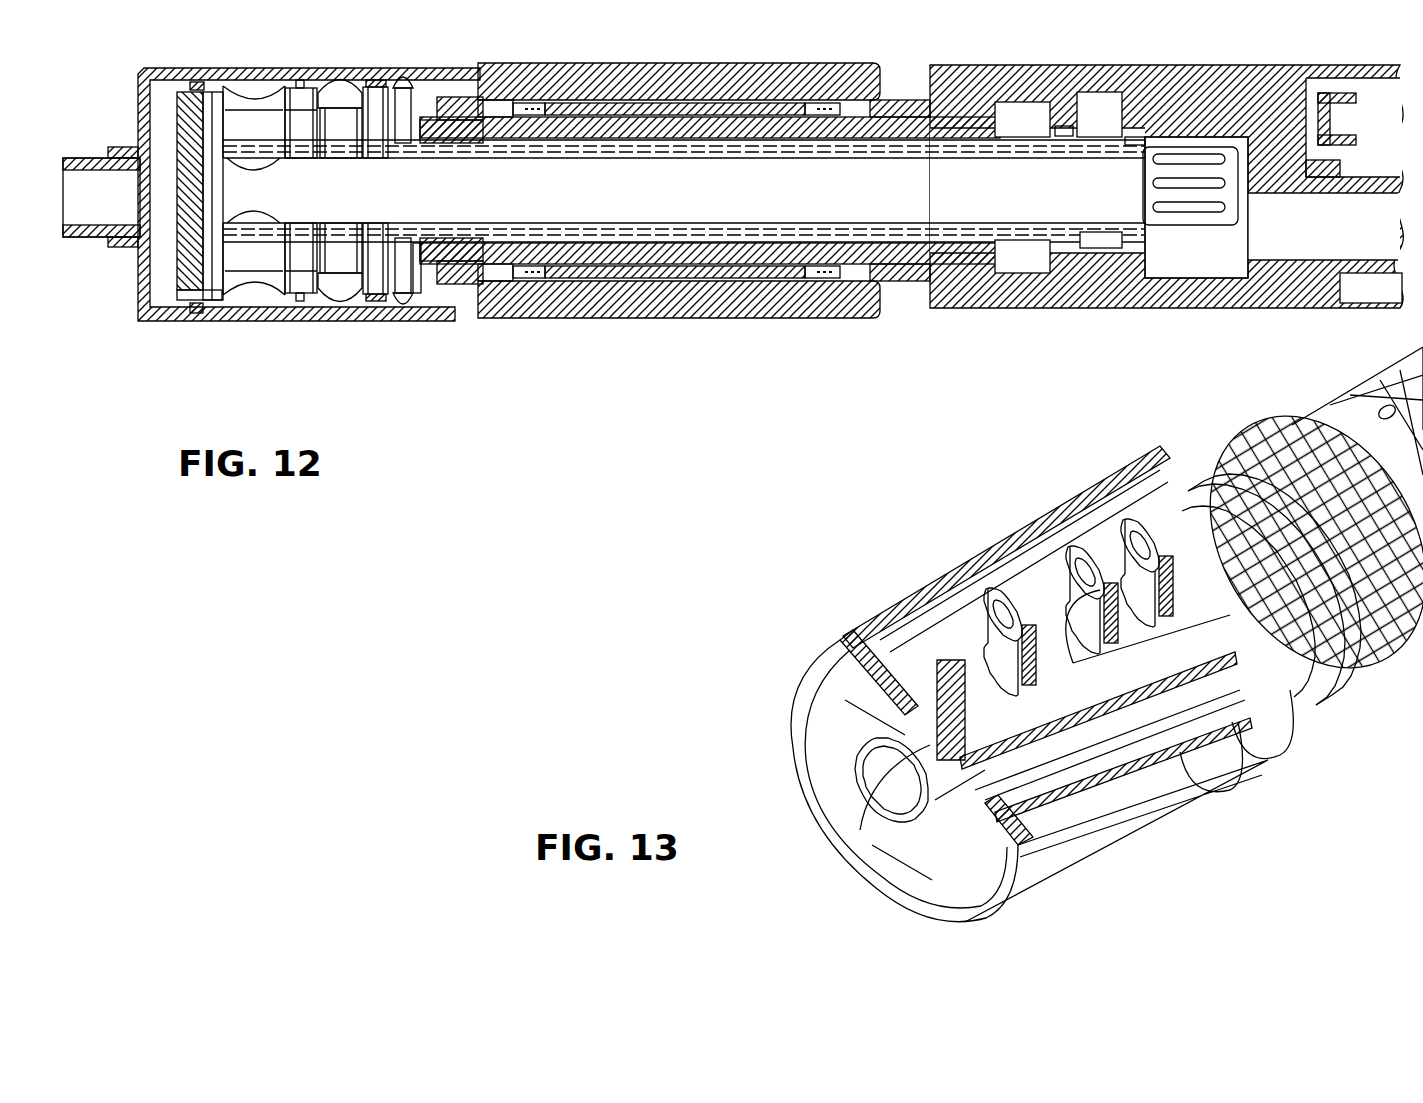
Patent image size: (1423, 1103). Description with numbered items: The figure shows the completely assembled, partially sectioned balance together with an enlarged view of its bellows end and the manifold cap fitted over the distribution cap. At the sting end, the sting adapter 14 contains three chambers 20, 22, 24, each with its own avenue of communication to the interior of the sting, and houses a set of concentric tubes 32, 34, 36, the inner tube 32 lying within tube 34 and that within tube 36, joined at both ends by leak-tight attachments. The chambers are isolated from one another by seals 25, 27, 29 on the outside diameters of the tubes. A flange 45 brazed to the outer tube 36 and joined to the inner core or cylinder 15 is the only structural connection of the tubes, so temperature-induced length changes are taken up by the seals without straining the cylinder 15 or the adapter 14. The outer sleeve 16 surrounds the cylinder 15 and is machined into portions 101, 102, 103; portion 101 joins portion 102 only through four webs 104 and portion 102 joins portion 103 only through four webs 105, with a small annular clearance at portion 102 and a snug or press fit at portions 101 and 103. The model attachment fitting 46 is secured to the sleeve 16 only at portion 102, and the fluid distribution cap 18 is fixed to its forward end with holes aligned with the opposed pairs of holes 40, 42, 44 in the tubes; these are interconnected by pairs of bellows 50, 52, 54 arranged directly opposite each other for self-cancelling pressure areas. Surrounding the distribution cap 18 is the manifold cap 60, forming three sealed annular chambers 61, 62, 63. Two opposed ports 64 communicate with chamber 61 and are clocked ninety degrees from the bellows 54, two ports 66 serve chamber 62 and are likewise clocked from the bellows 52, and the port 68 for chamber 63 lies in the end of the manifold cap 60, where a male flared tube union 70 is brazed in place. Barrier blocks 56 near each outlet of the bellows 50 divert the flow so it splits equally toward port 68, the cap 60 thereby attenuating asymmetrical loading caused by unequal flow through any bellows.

In FIG. 12, the sting adapter 14 is at (950, 66).
In FIG. 12, the inner core or cylinder 15 is at (641, 116).
In FIG. 12, the outer sleeve 16 is at (762, 66).
In FIG. 12, the fluid distribution cap 18 is at (180, 298).
In FIG. 13, the fluid distribution cap 18 is at (1196, 475).
In FIG. 12, the chamber 20 is at (1187, 258).
In FIG. 12, the chamber 22 is at (1100, 247).
In FIG. 12, the chamber 24 is at (1016, 258).
In FIG. 12, the seal 25 is at (1133, 140).
In FIG. 12, the seal 27 is at (1060, 126).
In FIG. 12, the seal 29 is at (977, 127).
In FIG. 12, the tube 32 is at (1186, 148).
In FIG. 12, the tube 34 is at (1094, 134).
In FIG. 12, the tube 36 is at (1012, 128).
In FIG. 12, the holes 40 is at (256, 265).
In FIG. 12, the holes 42 is at (342, 278).
In FIG. 12, the holes 44 is at (398, 276).
In FIG. 12, the flange 45 is at (447, 313).
In FIG. 12, the model attachment fitting 46 is at (606, 66).
In FIG. 12, the bellows 50 is at (223, 92).
In FIG. 13, the bellows 50 is at (982, 634).
In FIG. 12, the bellows 52 is at (305, 90).
In FIG. 13, the bellows 52 is at (1068, 590).
In FIG. 12, the bellows 54 is at (383, 86).
In FIG. 13, the bellows 54 is at (1136, 552).
In FIG. 12, the barrier blocks 56 is at (196, 90).
In FIG. 13, the barrier blocks 56 is at (909, 631).
In FIG. 12, the manifold cap 60 is at (142, 70).
In FIG. 13, the manifold cap 60 is at (1169, 815).
In FIG. 12, the annular chamber 61 is at (410, 82).
In FIG. 12, the annular chamber 62 is at (345, 84).
In FIG. 12, the annular chamber 63 is at (260, 39).
In FIG. 13, the ports 64 is at (1261, 725).
In FIG. 13, the ports 66 is at (1208, 759).
In FIG. 12, the port 68 is at (130, 172).
In FIG. 12, the male flared tube union 70 is at (74, 160).
In FIG. 13, the male flared tube union 70 is at (815, 783).
In FIG. 12, the portion of outer sleeve 101 is at (493, 102).
In FIG. 12, the portion of outer sleeve 102 is at (700, 108).
In FIG. 12, the portion of outer sleeve 103 is at (907, 100).
In FIG. 12, the webs 104 is at (531, 108).
In FIG. 12, the webs 105 is at (822, 108).